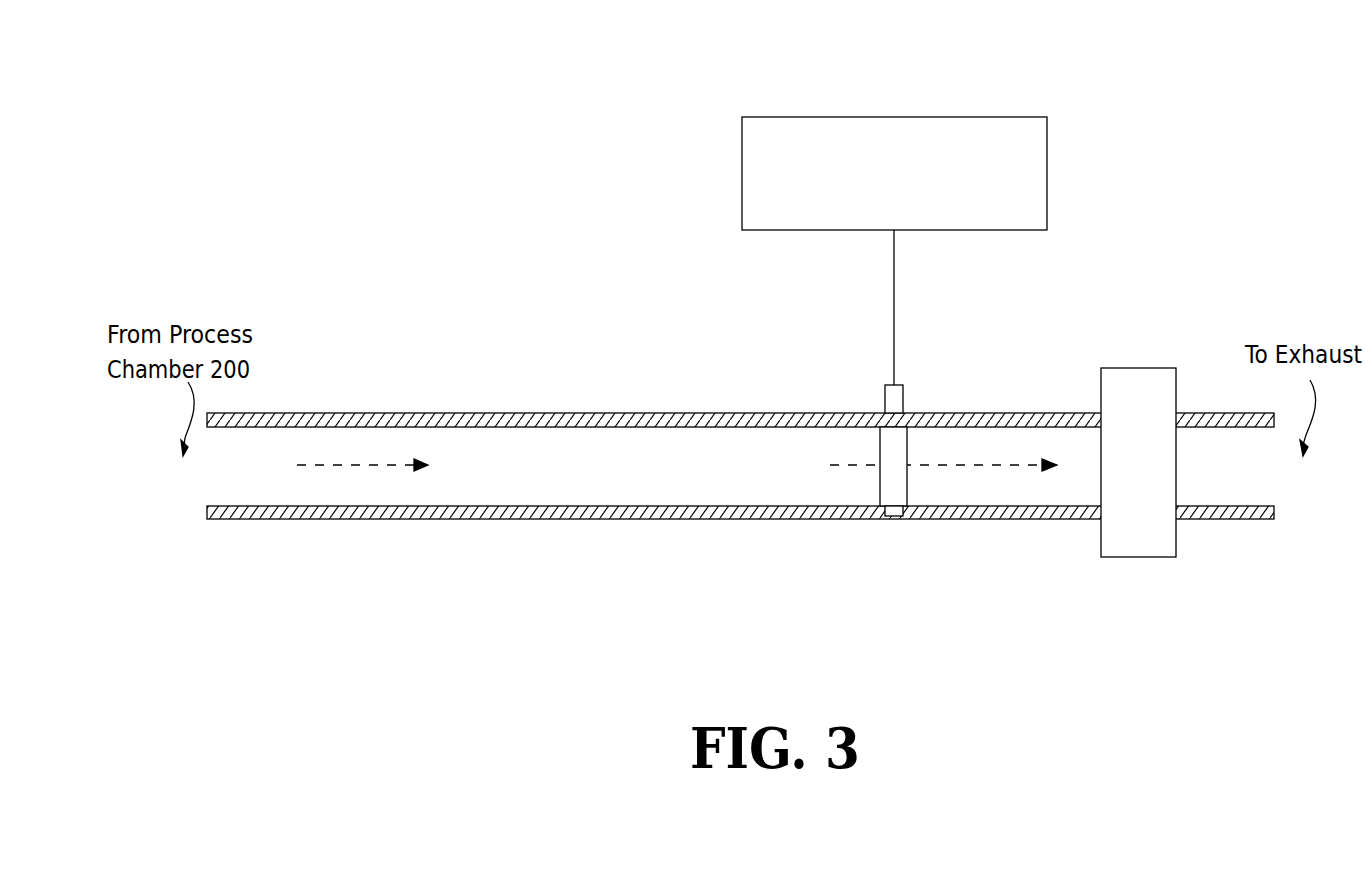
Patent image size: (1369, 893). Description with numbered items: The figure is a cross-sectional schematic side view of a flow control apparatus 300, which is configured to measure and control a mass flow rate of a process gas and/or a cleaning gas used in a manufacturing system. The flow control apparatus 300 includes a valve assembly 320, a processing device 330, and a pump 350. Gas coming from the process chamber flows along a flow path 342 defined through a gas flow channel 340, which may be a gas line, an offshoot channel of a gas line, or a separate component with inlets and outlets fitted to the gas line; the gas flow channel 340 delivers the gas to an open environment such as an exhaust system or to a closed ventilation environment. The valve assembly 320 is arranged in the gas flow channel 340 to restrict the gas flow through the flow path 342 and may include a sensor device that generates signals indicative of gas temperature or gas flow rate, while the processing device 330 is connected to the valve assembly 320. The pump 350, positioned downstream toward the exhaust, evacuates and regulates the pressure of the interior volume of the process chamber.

The flow control apparatus 300 is at (1197, 102).
The valve assembly 320 is at (921, 384).
The processing device 330 is at (894, 251).
The gas flow channel 340 is at (772, 519).
The flow path 342 is at (382, 467).
The pump 350 is at (1148, 359).